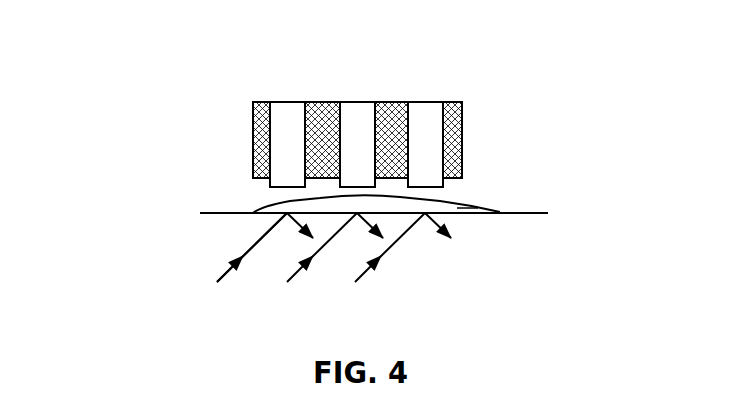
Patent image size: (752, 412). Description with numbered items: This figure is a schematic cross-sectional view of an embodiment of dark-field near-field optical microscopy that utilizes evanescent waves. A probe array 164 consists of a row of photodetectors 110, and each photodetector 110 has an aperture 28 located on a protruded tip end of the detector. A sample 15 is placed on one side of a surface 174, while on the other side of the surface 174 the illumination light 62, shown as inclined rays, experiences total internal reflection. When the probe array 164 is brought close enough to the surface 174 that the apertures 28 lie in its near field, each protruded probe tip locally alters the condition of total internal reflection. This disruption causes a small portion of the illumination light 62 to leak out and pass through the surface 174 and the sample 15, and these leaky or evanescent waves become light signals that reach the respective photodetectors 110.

The probe array 164 is at (377, 106).
The photodetector 110 is at (435, 110).
The aperture 28 is at (286, 188).
The sample 15 is at (493, 210).
The surface 174 is at (513, 214).
The illumination light 62 is at (312, 292).